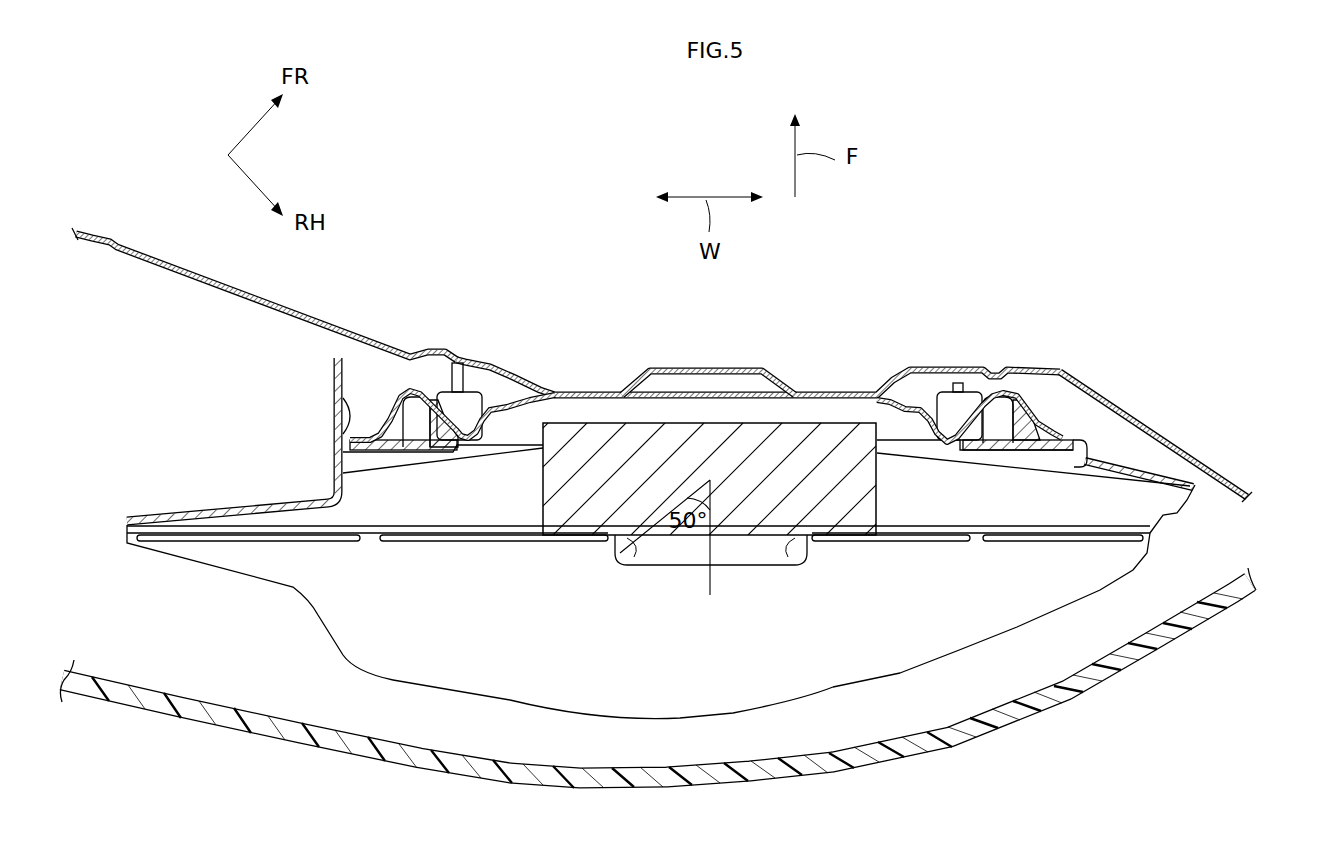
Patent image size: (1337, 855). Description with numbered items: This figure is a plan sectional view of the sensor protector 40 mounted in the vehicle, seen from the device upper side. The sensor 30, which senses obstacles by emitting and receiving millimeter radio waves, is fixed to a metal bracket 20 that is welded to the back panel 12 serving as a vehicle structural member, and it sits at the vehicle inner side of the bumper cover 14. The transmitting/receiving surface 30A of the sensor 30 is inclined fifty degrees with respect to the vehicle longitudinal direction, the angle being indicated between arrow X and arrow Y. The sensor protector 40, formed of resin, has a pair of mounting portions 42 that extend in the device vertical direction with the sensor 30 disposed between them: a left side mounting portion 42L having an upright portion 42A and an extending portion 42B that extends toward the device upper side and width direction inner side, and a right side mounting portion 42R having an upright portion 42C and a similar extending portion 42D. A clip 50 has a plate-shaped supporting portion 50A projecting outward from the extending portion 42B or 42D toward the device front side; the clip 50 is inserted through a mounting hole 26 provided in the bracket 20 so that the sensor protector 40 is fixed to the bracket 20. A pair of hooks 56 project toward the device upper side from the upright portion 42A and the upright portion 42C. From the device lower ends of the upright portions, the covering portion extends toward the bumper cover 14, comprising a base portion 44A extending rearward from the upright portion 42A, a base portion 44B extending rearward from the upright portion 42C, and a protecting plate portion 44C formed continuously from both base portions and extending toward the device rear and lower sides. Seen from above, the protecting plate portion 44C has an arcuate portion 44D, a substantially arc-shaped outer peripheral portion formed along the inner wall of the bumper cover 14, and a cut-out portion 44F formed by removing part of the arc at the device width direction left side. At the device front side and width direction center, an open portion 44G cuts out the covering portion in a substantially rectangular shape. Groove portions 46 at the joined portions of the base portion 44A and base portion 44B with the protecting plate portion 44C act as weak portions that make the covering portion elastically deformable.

The back panel 12 is at (178, 268).
The bumper cover 14 is at (160, 710).
The bracket 20 is at (725, 386).
The mounting hole 26 is at (394, 405).
The sensor 30 is at (812, 456).
The transmitting/receiving surface 30A is at (735, 542).
The sensor protector 40 is at (150, 500).
The mounting portions 42 is at (724, 436).
The left side mounting portion 42L is at (238, 439).
The right side mounting portion 42R is at (1190, 427).
The upright portion 42A is at (280, 462).
The extending portion 42B is at (333, 396).
The upright portion 42C is at (1135, 472).
The extending portion 42D is at (1093, 390).
The base portion 44A is at (445, 507).
The base portion 44B is at (1050, 510).
The protecting plate portion 44C is at (905, 633).
The arcuate portion 44D is at (481, 698).
The cut-out portion 44F is at (290, 592).
The open portion 44G is at (785, 548).
The groove portion 46 is at (388, 548).
The clip 50 is at (706, 343).
The supporting portion 50A is at (402, 395).
The hook 56 is at (468, 402).